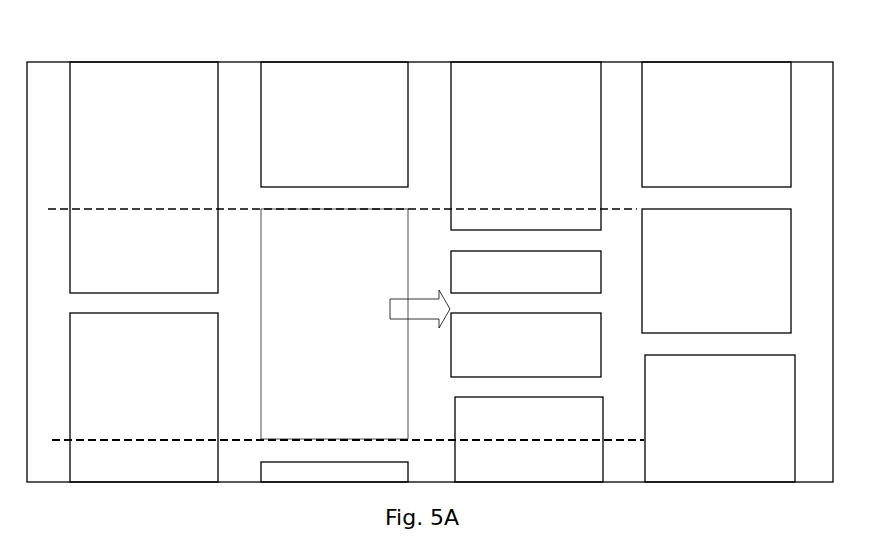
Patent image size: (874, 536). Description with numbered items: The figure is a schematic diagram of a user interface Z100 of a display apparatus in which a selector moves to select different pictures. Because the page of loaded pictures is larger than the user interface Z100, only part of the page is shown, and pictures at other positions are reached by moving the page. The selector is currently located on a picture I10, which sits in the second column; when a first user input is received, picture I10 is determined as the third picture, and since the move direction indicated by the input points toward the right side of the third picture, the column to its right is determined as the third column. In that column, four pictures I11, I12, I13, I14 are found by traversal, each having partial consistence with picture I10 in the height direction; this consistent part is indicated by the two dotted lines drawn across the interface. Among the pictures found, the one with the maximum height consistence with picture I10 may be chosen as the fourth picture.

The user interface Z100 is at (430, 247).
The picture I10 is at (334, 324).
The picture I11 is at (526, 146).
The picture I12 is at (526, 272).
The picture I13 is at (526, 345).
The picture I14 is at (529, 439).